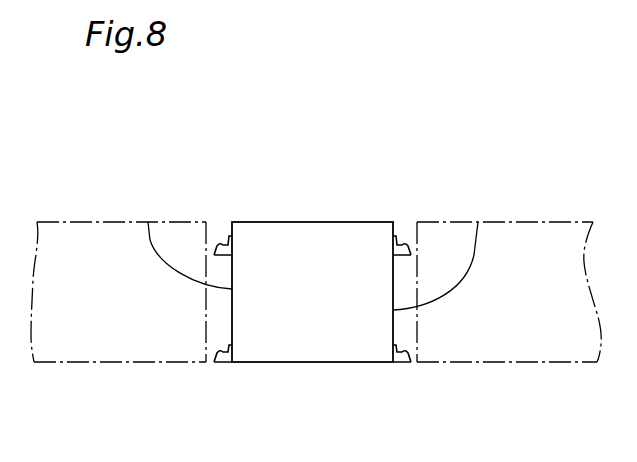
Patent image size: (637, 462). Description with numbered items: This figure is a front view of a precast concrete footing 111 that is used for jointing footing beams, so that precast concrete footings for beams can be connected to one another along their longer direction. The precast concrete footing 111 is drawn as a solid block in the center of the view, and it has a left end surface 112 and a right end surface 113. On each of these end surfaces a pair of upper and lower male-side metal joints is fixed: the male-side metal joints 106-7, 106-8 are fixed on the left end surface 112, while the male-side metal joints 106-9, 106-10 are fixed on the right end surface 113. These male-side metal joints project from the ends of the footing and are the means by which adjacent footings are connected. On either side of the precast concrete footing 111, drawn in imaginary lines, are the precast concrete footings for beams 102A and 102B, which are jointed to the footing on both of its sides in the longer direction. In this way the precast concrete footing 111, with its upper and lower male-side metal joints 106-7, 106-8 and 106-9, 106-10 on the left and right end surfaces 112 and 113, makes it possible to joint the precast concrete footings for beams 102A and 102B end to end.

The precast concrete footing for beams 102A is at (86, 240).
The precast concrete footing for beams 102B is at (535, 240).
The precast concrete footing for jointing footing beams 111 is at (303, 183).
The left end surface 112 is at (187, 240).
The right end surface 113 is at (477, 222).
The male-side metal joint 106-7 is at (215, 240).
The male-side metal joint 106-8 is at (227, 363).
The male-side metal joint 106-9 is at (409, 240).
The male-side metal joint 106-10 is at (402, 363).